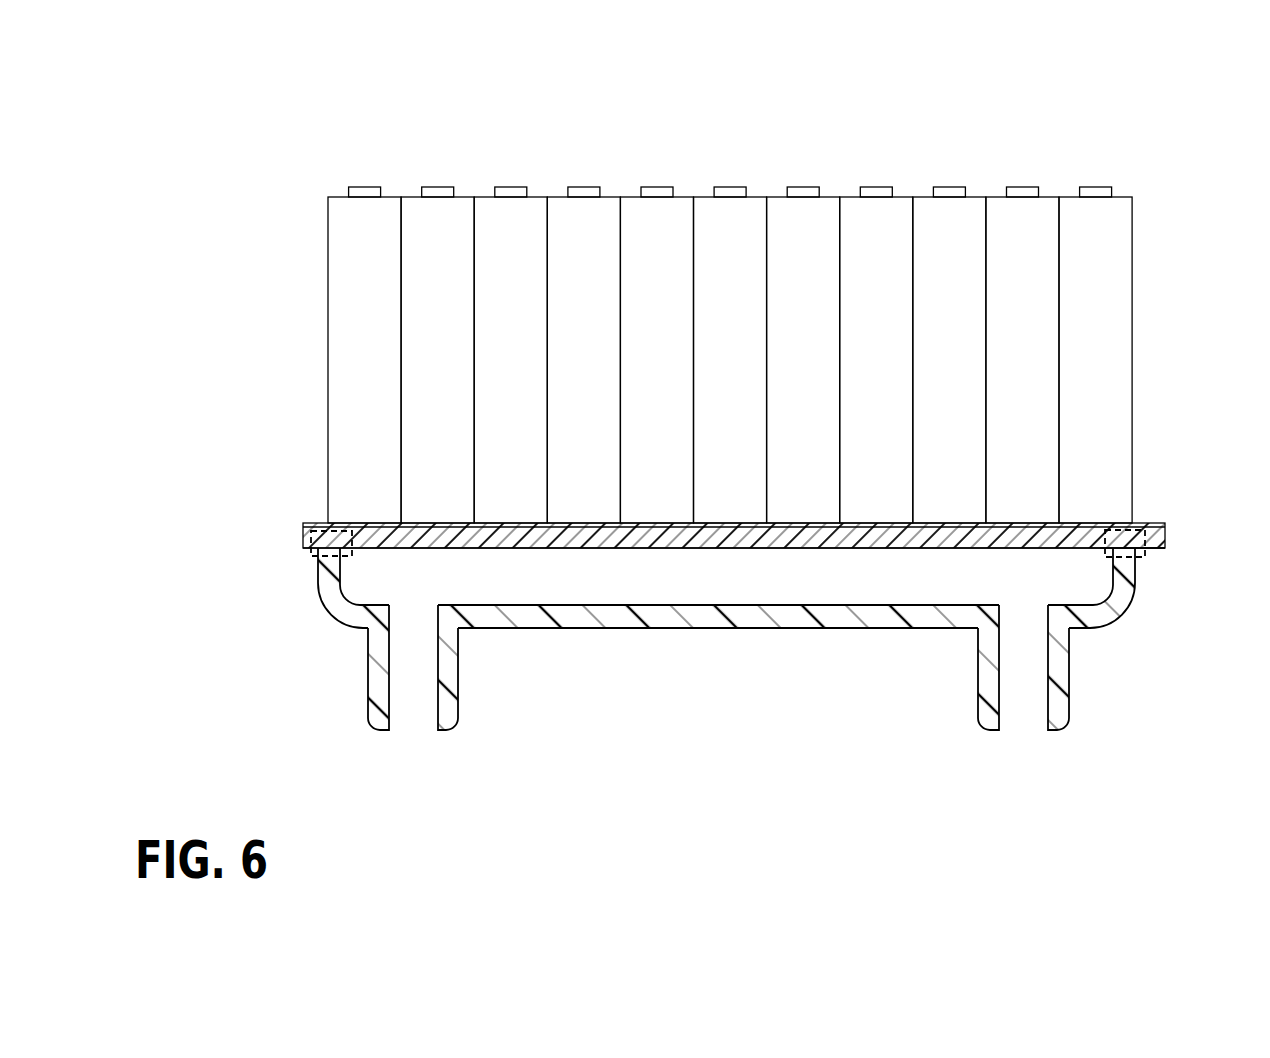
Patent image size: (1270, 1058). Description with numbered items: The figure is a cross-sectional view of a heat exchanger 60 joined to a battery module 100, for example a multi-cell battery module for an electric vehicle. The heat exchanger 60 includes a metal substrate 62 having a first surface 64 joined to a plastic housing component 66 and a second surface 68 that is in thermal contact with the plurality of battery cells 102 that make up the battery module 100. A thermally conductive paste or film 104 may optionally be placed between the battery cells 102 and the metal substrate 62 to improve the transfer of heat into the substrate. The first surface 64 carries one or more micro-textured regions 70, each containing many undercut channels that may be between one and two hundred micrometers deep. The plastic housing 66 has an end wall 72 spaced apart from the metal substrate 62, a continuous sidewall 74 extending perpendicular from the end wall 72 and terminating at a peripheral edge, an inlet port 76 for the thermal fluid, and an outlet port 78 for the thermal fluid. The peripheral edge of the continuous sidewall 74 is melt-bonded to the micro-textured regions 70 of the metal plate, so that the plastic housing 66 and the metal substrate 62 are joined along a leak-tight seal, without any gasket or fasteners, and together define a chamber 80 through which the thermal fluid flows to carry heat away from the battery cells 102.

The heat exchanger 60 is at (733, 658).
The metal substrate 62 is at (303, 540).
The first surface 64 is at (503, 548).
The plastic housing component 66 is at (857, 628).
The second surface 68 is at (1100, 528).
The micro-textured regions 70 is at (298, 564).
The end wall 72 is at (562, 628).
The continuous sidewall 74 is at (324, 606).
The inlet port 76 is at (1067, 728).
The outlet port 78 is at (375, 730).
The chamber 80 is at (709, 588).
The battery module 100 is at (687, 156).
The battery cells 102 is at (948, 218).
The thermally conductive paste or film 104 is at (1152, 525).